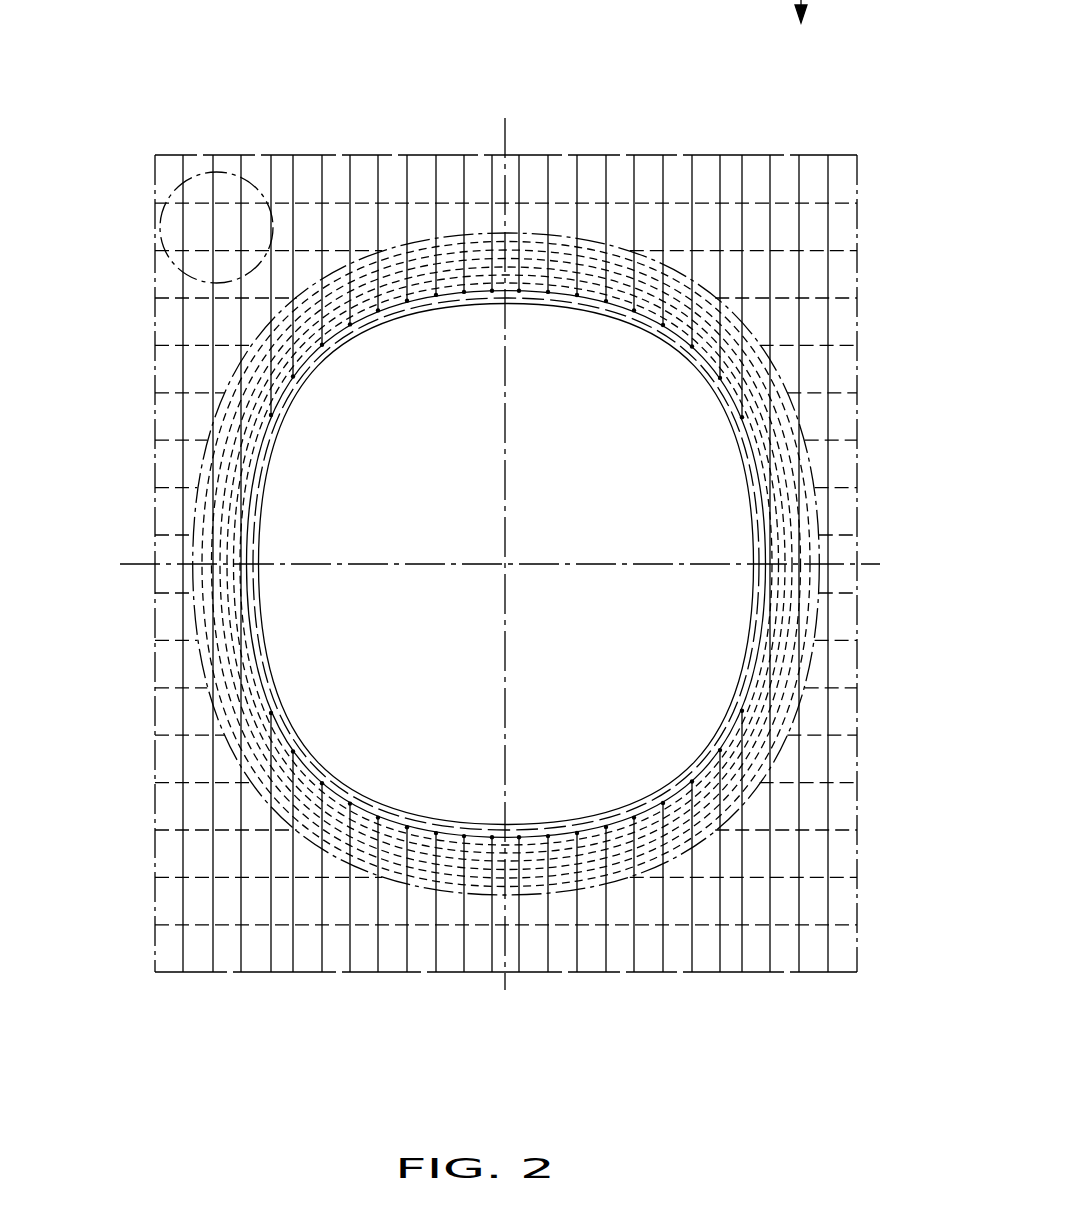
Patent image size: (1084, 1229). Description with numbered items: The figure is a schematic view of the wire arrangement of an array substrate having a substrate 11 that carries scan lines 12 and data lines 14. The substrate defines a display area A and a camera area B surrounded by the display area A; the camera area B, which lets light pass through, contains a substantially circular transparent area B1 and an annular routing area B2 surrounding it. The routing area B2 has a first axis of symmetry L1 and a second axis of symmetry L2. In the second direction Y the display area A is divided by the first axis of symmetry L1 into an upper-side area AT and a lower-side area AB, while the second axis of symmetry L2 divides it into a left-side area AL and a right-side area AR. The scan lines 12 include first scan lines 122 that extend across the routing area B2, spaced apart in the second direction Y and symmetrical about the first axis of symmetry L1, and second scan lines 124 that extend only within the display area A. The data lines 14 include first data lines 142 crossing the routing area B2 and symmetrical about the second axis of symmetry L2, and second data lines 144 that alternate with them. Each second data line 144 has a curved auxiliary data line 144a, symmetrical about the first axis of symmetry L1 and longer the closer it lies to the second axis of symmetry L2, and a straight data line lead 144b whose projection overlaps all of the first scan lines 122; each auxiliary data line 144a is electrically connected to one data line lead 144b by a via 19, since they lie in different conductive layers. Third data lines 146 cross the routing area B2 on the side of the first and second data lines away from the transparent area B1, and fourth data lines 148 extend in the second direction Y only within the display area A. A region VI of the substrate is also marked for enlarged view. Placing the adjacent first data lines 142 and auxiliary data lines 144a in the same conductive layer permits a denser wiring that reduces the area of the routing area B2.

The substrate 11 is at (449, 486).
The scan lines 12 is at (558, 547).
The first scan lines 122 is at (810, 345).
The second scan lines 124 is at (813, 203).
The data lines 14 is at (496, 627).
The first data lines 142 is at (483, 621).
The second data lines 144 is at (353, 584).
The auxiliary data line 144a is at (303, 880).
The data line lead 144b is at (318, 182).
The third data lines 146 is at (242, 943).
The fourth data lines 148 is at (185, 943).
The via 19 is at (434, 291).
The enlarged region VI is at (185, 186).
The display area A is at (449, 486).
The left-side area AL is at (473, 178).
The right-side area AR is at (623, 165).
The upper-side area AT is at (168, 552).
The lower-side area AB is at (172, 583).
The camera area B is at (438, 500).
The transparent area B1 is at (297, 480).
The routing area B2 is at (235, 488).
The first axis of symmetry L1 is at (873, 564).
The second axis of symmetry L2 is at (507, 980).
The second direction Y is at (799, 28).